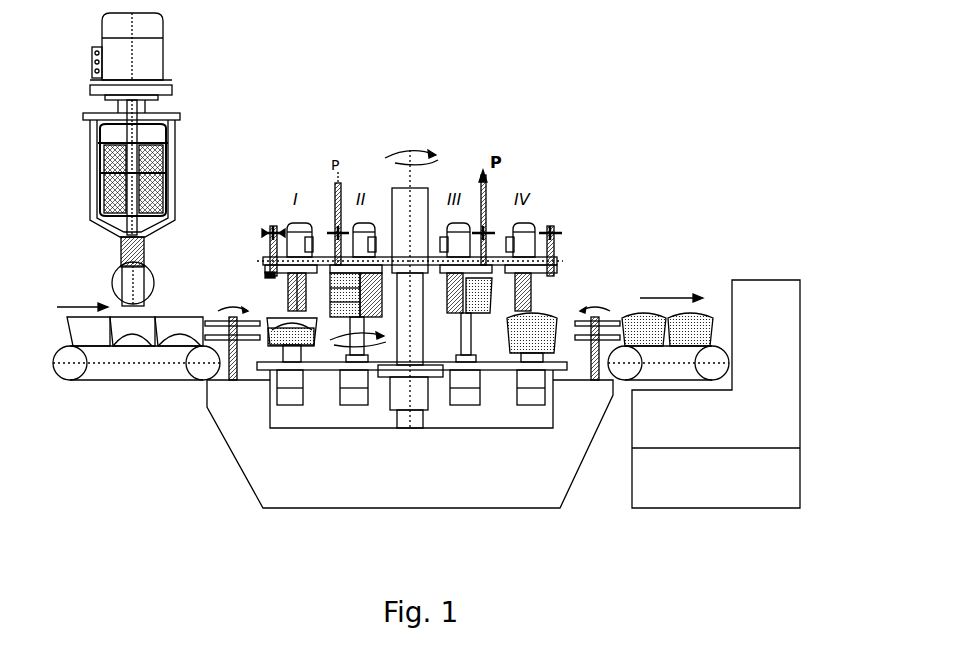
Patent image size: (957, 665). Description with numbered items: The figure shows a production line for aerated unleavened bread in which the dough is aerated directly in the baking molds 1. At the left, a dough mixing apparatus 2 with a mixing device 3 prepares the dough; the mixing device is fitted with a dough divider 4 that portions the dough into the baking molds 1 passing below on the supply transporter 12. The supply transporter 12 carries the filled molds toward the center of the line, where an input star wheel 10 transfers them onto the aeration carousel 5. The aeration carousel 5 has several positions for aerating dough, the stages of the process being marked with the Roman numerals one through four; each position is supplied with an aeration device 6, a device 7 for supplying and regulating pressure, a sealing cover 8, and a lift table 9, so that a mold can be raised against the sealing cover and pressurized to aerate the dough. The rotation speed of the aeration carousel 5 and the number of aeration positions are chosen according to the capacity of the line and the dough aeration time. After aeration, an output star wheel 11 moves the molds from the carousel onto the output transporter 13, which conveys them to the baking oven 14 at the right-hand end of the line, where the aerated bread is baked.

The baking molds 1 is at (72, 305).
The dough mixing apparatus 2 is at (176, 113).
The mixing device 3 is at (176, 138).
The dough divider 4 is at (116, 276).
The aeration carousel 5 is at (403, 242).
The aeration device 6 is at (287, 291).
The device for supplying and regulating pressure 7 is at (273, 224).
The sealing cover 8 is at (260, 258).
The lift table 9 is at (260, 366).
The input star wheel 10 is at (229, 318).
The output star wheel 11 is at (610, 320).
The supply transporter 12 is at (135, 378).
The output transporter 13 is at (683, 368).
The baking oven 14 is at (760, 292).